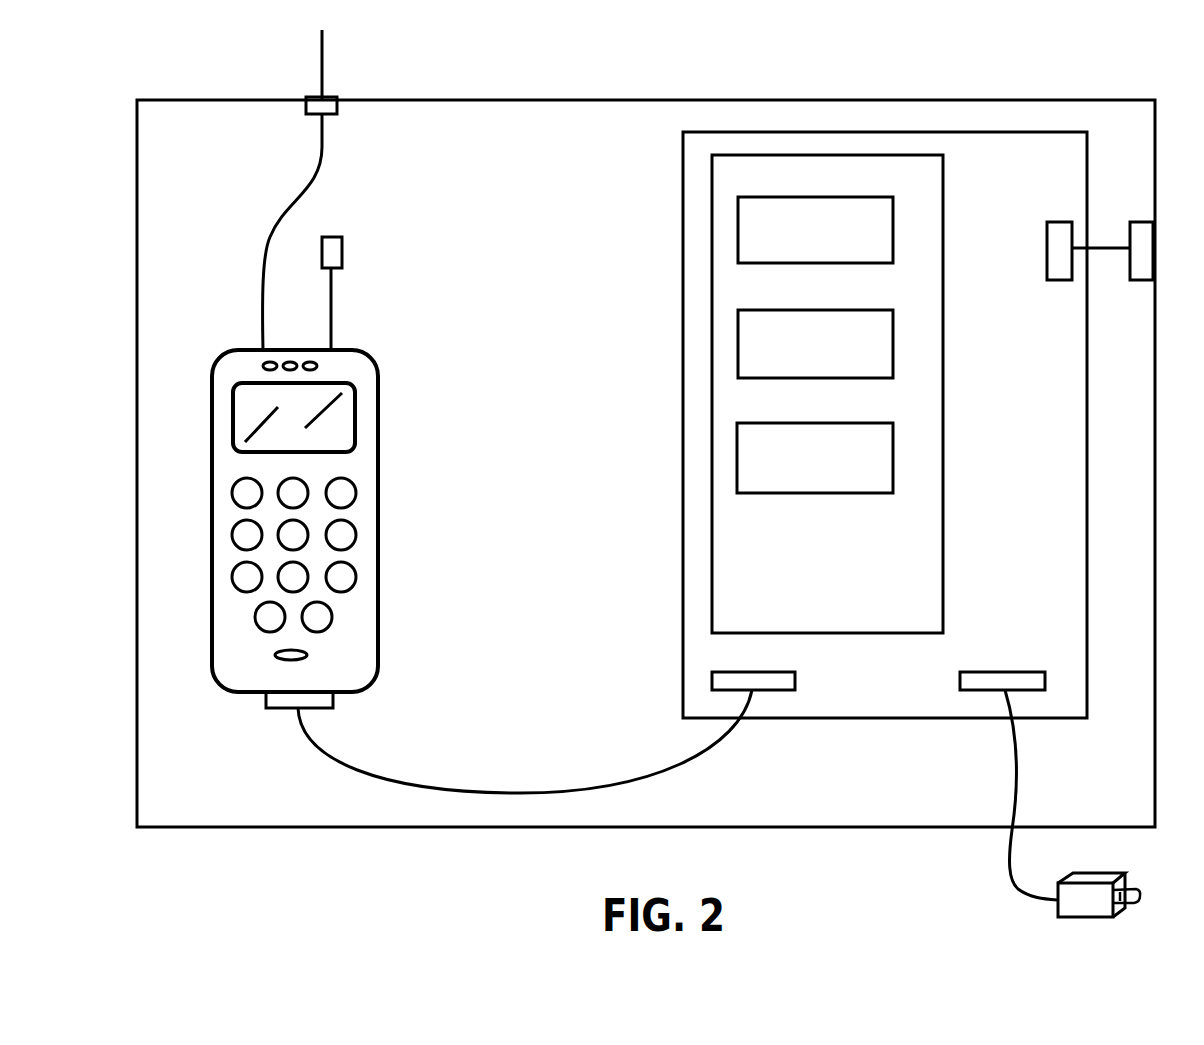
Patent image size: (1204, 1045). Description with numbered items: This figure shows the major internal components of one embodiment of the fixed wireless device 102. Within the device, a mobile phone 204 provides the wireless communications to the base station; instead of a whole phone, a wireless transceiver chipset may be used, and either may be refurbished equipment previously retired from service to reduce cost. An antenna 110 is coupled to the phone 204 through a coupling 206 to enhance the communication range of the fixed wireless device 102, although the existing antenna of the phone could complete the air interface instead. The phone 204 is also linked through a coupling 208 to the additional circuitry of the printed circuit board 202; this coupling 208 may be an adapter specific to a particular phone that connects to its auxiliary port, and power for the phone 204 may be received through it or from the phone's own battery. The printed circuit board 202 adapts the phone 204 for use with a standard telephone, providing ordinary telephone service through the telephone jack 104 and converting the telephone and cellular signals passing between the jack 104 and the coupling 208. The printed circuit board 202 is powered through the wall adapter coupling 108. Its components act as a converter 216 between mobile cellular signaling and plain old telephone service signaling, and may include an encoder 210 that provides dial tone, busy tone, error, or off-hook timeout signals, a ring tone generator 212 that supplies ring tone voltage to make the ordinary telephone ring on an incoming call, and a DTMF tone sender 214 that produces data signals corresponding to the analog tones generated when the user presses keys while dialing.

The fixed wireless device 102 is at (1080, 100).
The RJ-11 jack 104 is at (1145, 235).
The wall adapter coupling 108 is at (1010, 873).
The antenna 110 is at (325, 62).
The printed circuit board 202 is at (688, 225).
The mobile phone 204 is at (362, 356).
The coupling 206 is at (262, 270).
The coupling 208 is at (318, 700).
The encoder 210 is at (875, 197).
The ring tone generator 212 is at (875, 310).
The DTMF tone sender 214 is at (875, 423).
The converter 216 is at (925, 593).